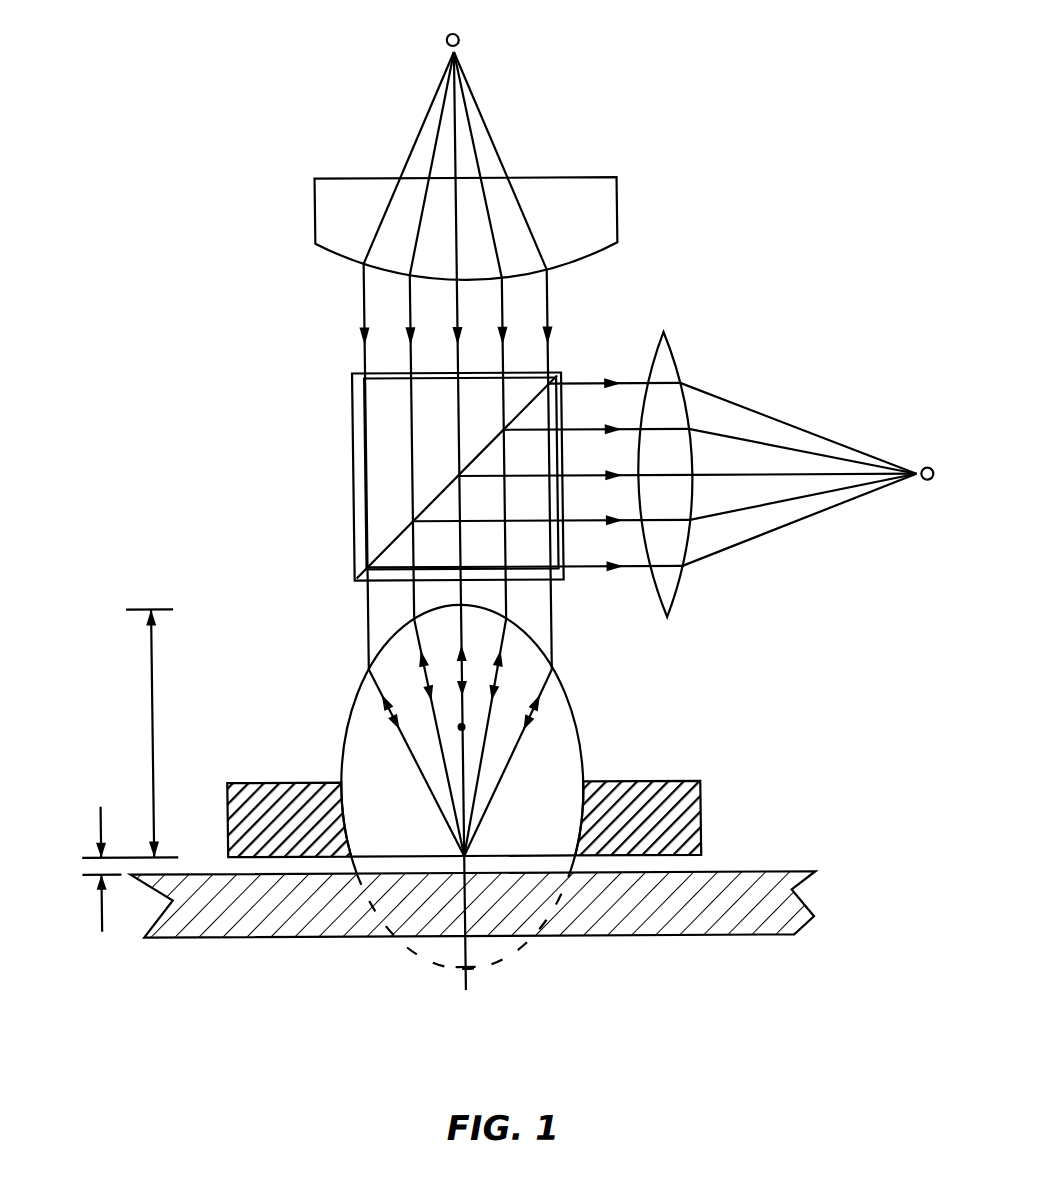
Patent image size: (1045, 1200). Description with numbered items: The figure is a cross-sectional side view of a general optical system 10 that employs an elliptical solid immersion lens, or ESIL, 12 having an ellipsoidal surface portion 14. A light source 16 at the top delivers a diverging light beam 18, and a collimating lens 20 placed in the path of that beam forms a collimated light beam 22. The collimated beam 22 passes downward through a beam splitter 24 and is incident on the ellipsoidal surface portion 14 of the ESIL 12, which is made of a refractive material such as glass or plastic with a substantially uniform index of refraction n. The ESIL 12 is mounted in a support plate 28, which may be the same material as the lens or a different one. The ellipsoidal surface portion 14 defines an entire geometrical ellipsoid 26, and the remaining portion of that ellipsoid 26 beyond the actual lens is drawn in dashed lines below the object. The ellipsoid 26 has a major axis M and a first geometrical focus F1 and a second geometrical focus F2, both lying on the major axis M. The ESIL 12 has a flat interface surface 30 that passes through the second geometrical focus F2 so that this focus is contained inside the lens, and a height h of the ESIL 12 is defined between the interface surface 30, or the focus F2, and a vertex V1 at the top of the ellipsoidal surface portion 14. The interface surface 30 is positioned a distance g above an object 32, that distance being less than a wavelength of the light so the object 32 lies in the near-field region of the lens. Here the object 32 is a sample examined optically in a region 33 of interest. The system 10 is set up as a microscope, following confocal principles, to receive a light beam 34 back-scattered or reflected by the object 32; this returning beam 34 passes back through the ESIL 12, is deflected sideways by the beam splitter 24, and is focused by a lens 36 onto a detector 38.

The optical system 10 is at (672, 121).
The elliptical solid immersion lens 12 is at (355, 735).
The ellipsoidal surface portion 14 is at (562, 688).
The light source 16 is at (467, 40).
The diverging light beam 18 is at (495, 132).
The collimating lens 20 is at (618, 226).
The collimated light beam 22 is at (366, 308).
The beam splitter 24 is at (353, 518).
The geometrical ellipsoid 26 is at (505, 958).
The support plate 28 is at (268, 782).
The flat interface surface 30 is at (378, 856).
The object 32 is at (672, 940).
The region of interest 33 is at (428, 858).
The back-scattered or reflected light beam 34 is at (602, 383).
The lens 36 is at (669, 350).
The detector 38 is at (930, 483).
The index of refraction n is at (558, 764).
The first geometrical focus F1 is at (455, 727).
The second geometrical focus F2 is at (468, 856).
The vertex V1 is at (460, 606).
The height h is at (151, 718).
The distance g is at (98, 905).
The major axis M is at (447, 950).